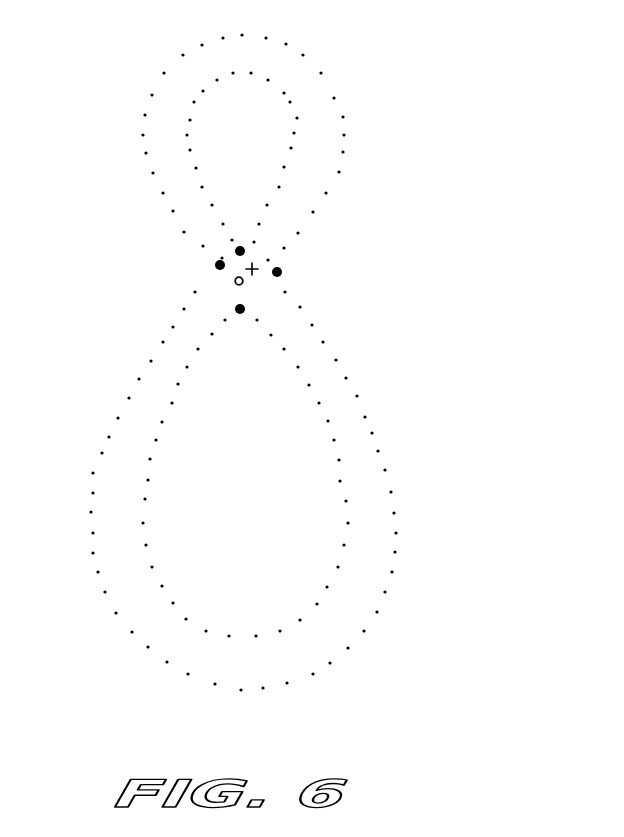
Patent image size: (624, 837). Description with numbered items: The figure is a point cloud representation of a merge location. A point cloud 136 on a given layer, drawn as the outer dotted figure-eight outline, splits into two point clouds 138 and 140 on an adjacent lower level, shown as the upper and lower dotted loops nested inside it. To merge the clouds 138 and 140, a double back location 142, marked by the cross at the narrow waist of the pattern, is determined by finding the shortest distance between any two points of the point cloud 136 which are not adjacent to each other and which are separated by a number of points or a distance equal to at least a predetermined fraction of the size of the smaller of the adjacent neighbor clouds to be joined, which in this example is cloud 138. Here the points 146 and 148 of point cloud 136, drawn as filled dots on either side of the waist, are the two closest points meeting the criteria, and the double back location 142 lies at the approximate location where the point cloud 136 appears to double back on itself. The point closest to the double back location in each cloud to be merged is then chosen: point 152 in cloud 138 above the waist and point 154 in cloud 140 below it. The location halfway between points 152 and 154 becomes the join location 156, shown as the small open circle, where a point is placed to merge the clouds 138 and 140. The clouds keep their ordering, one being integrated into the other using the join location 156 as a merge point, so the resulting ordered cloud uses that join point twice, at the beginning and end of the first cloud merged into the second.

The point cloud 136 is at (343, 116).
The point cloud 138 is at (280, 90).
The point cloud 140 is at (333, 440).
The double back location 142 is at (254, 266).
The point 146 is at (216, 265).
The point 148 is at (282, 271).
The point 152 is at (240, 247).
The point 154 is at (240, 313).
The join location 156 is at (235, 284).